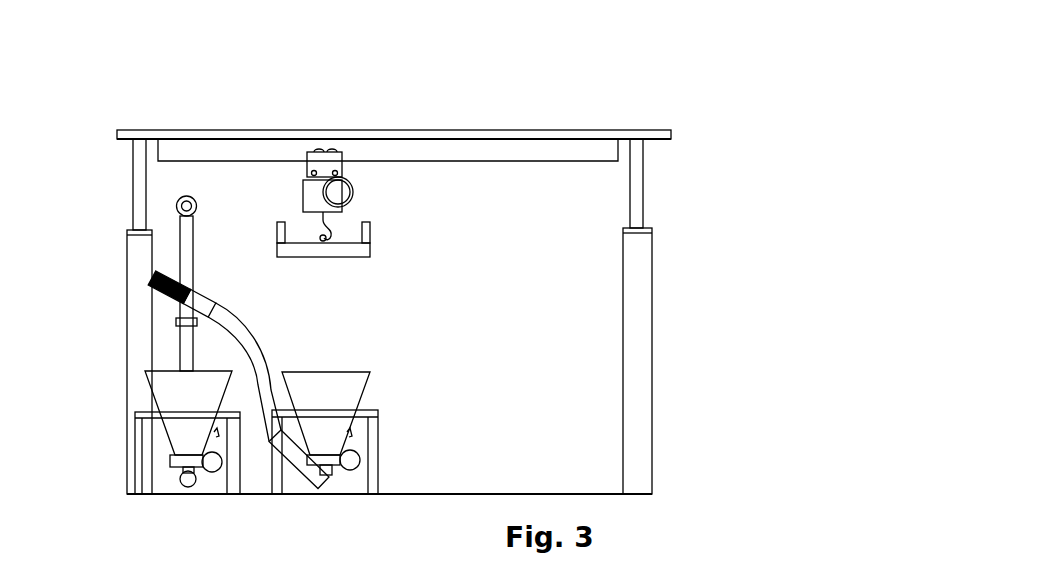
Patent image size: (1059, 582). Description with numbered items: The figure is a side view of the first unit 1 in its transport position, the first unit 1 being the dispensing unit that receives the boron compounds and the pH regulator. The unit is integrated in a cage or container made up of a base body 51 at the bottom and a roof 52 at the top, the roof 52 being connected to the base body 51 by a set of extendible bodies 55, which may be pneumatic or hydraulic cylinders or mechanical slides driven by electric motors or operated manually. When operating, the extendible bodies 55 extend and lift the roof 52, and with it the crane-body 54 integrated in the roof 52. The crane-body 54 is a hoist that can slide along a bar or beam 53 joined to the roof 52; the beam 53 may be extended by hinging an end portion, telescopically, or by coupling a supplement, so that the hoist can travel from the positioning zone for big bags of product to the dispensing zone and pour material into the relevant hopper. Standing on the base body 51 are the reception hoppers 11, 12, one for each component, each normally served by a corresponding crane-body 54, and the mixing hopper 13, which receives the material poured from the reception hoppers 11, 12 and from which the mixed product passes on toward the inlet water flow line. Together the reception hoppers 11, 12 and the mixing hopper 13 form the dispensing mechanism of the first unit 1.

The first unit 1 is at (518, 348).
The reception hopper 11 is at (517, 331).
The reception hopper 12 is at (325, 385).
The mixing hopper 13 is at (178, 391).
The base body 51 is at (408, 494).
The roof 52 is at (578, 132).
The bar or beam 53 is at (488, 152).
The crane-body 54 is at (303, 190).
The extendible bodies 55 is at (640, 333).